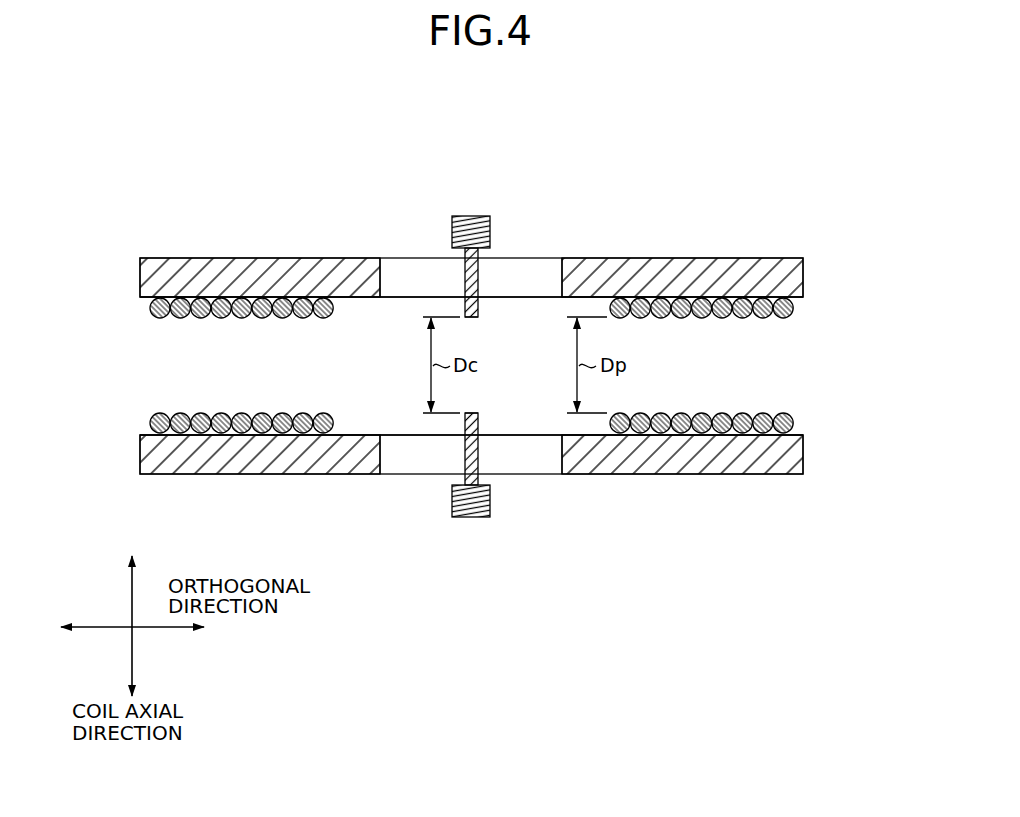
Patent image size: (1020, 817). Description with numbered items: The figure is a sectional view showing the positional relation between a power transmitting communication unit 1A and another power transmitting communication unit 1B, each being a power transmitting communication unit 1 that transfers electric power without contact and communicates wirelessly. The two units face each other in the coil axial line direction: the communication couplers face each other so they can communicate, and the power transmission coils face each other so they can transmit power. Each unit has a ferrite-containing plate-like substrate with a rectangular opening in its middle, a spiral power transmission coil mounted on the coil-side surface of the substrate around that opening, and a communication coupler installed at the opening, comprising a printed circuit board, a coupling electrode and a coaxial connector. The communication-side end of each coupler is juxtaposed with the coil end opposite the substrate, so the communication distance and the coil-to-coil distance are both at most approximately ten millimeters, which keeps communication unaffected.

The power transmitting communication unit 1 is at (474, 369).
The power transmitting communication unit 1A is at (657, 160).
The power transmitting communication unit 1B is at (657, 572).